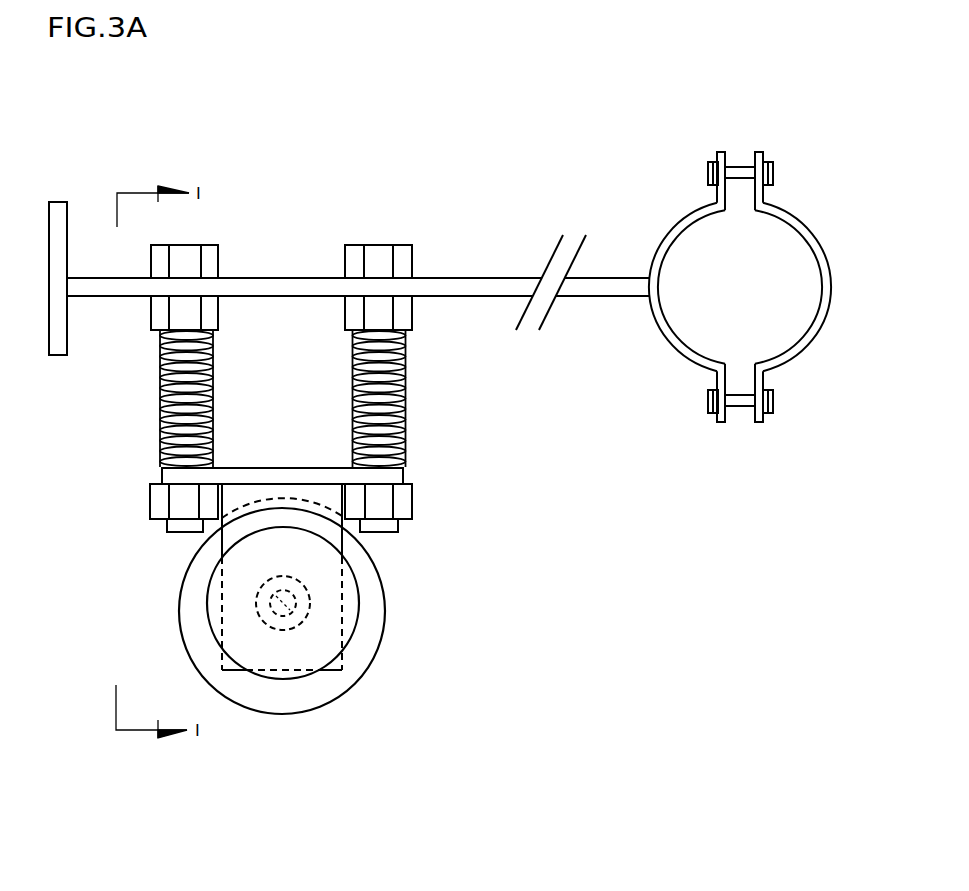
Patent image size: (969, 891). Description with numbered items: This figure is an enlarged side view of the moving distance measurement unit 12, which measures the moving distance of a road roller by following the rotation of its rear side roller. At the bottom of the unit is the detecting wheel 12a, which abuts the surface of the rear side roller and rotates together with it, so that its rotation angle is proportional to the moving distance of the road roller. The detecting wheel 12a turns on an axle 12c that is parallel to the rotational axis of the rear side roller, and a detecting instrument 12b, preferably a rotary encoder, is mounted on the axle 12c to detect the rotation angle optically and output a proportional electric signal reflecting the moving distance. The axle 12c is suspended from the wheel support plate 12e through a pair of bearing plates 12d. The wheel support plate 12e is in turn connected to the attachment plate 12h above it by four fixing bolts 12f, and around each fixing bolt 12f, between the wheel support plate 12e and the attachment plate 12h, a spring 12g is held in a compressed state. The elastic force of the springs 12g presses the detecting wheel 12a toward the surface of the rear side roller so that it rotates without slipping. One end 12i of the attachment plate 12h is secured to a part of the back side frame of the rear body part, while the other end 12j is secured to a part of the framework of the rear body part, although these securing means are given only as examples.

The moving distance measurement unit 12 is at (425, 150).
The detecting wheel 12a is at (373, 602).
The detecting instrument 12b is at (310, 648).
The axle 12c is at (277, 600).
The bearing plate 12d is at (345, 509).
The wheel support plate 12e is at (292, 475).
The fixing bolt 12f is at (387, 267).
The spring 12g is at (403, 400).
The attachment plate 12h is at (283, 290).
The one end of attachment plate 12i is at (60, 315).
The other end of attachment plate 12j is at (668, 343).